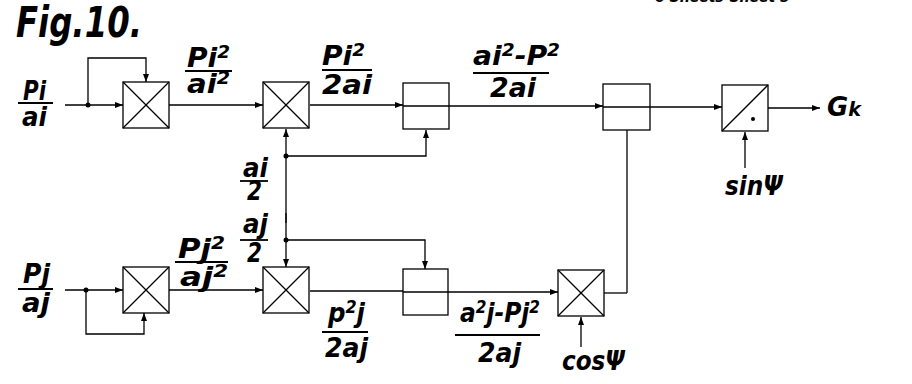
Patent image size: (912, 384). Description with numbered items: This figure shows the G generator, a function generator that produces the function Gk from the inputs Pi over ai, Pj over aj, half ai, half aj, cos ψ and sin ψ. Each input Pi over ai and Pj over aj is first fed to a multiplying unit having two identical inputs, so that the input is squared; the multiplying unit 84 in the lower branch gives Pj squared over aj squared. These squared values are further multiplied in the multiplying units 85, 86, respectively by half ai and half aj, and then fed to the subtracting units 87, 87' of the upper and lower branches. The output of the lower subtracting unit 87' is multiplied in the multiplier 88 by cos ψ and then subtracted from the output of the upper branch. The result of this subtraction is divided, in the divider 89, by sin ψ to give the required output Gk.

The multiplying unit 84 is at (137, 267).
The multiplying unit 85 is at (283, 82).
The multiplying unit 86 is at (283, 313).
The subtracting unit 87 is at (426, 90).
The subtracting unit 87' is at (445, 277).
The multiplier 88 is at (578, 270).
The divider 89 is at (745, 85).